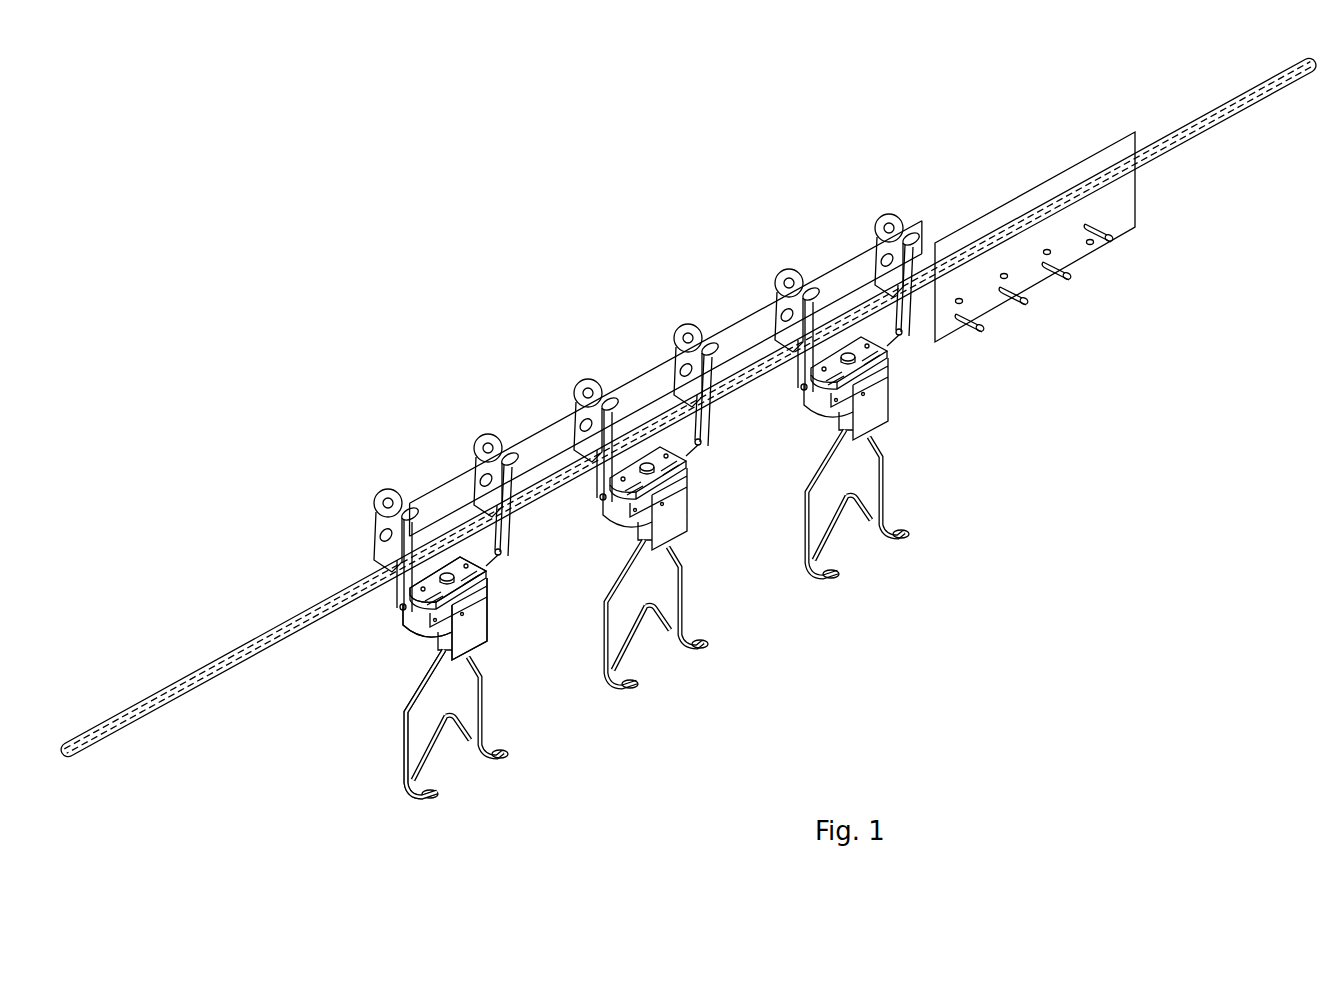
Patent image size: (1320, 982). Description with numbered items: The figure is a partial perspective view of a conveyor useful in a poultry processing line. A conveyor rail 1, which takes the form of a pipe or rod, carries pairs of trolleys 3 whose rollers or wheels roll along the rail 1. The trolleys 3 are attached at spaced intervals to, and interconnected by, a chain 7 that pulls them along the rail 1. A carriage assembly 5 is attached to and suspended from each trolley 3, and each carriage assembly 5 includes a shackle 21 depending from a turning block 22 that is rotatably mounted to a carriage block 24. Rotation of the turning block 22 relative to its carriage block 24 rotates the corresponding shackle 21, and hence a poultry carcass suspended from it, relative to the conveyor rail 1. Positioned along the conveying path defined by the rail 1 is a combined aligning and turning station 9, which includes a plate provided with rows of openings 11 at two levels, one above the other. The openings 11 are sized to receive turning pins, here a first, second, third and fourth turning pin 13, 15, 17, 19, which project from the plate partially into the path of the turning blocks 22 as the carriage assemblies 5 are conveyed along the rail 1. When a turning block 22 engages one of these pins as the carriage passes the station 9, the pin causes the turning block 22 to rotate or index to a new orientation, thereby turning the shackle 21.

The conveyor rail 1 is at (455, 495).
The trolleys 3 is at (367, 491).
The carriage assembly 5 is at (458, 603).
The chain 7 is at (1190, 138).
The aligning and turning station 9 is at (1128, 213).
The openings 11 is at (1050, 250).
The first turning pin 13 is at (985, 330).
The second turning pin 15 is at (1027, 305).
The third turning pin 17 is at (1070, 280).
The fourth turning pin 19 is at (1097, 228).
The shackle 21 is at (400, 745).
The turning block 22 is at (480, 645).
The carriage block 24 is at (420, 626).